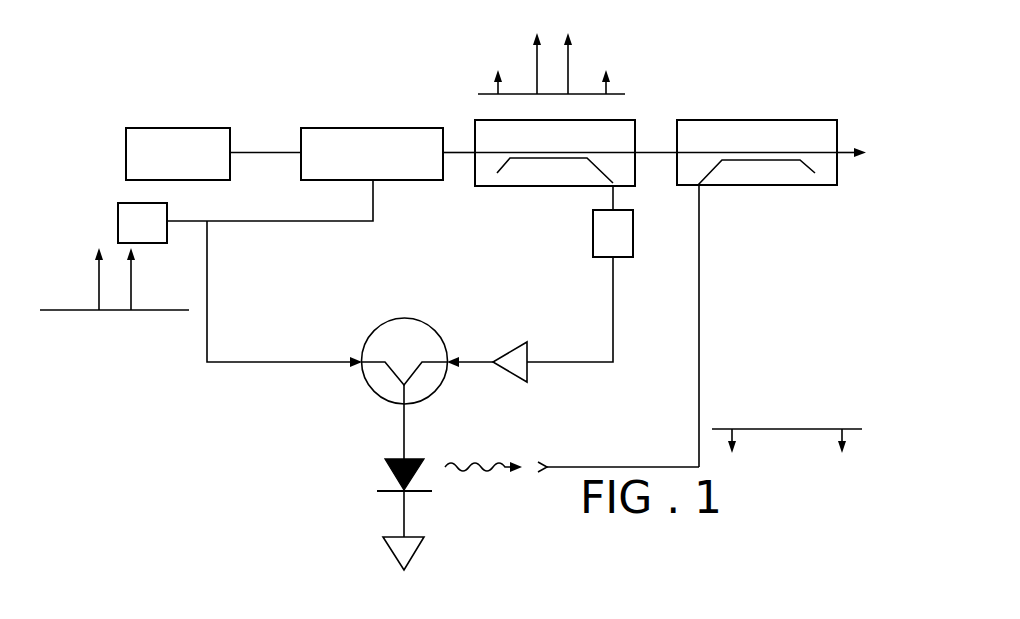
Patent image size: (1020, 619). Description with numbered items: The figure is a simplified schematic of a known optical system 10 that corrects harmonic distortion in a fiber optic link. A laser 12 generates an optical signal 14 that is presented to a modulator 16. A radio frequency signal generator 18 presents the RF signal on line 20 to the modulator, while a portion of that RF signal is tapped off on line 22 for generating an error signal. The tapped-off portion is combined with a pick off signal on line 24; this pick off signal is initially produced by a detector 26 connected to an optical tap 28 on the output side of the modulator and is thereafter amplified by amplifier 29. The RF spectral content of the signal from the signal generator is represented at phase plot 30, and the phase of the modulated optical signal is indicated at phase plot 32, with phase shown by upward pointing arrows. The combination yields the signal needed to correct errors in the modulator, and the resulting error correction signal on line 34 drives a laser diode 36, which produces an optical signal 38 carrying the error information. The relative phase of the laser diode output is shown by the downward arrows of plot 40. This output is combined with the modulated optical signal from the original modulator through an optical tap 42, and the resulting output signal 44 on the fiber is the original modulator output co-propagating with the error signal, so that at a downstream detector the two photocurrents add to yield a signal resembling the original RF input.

The system 10 is at (677, 76).
The laser 12 is at (179, 128).
The optical signal 14 is at (243, 152).
The modulator 16 is at (388, 128).
The radio frequency signal generator 18 is at (167, 220).
The line 20 is at (288, 221).
The line 22 is at (279, 362).
The line 24 is at (480, 342).
The detector 26 is at (633, 228).
The optical tap 28 is at (522, 186).
The amplifier 29 is at (525, 372).
The phase plot 30 is at (150, 310).
The phase plot 32 is at (480, 94).
The line 34 is at (404, 428).
The laser diode 36 is at (393, 487).
The optical signal 38 is at (472, 462).
The plot 40 is at (792, 429).
The optical tap 42 is at (728, 120).
The output signal 44 is at (843, 148).